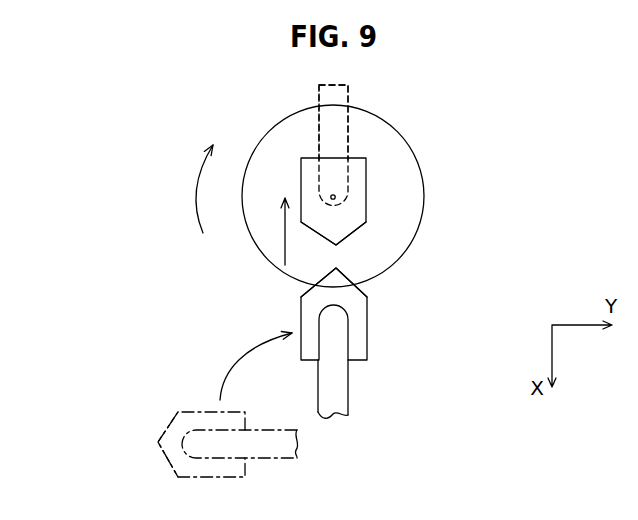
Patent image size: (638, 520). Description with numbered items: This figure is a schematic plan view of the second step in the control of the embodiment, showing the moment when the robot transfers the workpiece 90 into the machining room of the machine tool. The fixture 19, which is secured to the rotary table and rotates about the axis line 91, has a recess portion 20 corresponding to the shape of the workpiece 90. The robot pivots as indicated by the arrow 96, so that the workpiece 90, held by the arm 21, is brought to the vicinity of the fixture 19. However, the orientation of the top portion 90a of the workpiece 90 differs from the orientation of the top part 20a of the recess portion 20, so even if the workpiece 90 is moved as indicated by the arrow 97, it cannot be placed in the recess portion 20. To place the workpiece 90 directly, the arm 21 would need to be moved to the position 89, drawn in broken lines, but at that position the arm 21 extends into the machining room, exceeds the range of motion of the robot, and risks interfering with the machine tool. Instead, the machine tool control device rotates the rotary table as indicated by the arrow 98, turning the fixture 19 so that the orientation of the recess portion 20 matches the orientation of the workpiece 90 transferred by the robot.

The fixture 19 is at (380, 131).
The recess portion 20 is at (357, 172).
The top part of the recess portion 20a is at (336, 245).
The arm 21 is at (348, 98).
The position 89 is at (319, 122).
The axis line 91 is at (335, 197).
The workpiece 90 is at (358, 328).
The top portion of the workpiece 90a is at (337, 268).
The arrow 96 is at (235, 350).
The arrow 97 is at (285, 237).
The arrow 98 is at (197, 190).